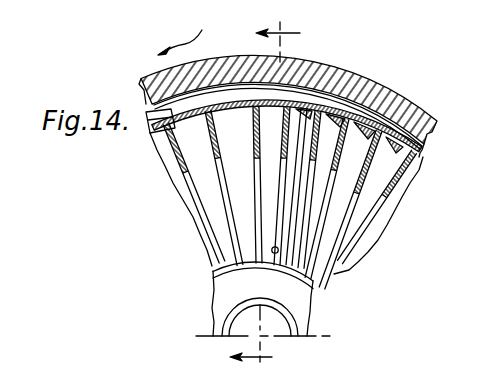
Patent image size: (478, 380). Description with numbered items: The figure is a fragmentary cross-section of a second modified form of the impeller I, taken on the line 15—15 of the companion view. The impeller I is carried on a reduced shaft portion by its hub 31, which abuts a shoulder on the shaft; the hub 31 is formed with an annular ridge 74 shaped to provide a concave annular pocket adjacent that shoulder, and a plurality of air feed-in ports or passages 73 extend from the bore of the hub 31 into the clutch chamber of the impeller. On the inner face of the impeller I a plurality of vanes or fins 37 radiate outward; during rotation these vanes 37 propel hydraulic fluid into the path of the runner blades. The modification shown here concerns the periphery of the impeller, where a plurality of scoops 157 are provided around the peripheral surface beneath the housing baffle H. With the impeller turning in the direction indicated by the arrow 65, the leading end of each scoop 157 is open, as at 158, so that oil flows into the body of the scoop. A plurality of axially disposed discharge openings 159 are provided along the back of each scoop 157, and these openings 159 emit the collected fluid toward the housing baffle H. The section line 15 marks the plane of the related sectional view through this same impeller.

The arrow 65 is at (181, 33).
The line 15— 15 is at (268, 193).
The housing baffle H is at (350, 66).
The scoops 157 is at (378, 95).
The open leading end of scoop 158 is at (252, 96).
The discharge openings 159 is at (331, 126).
The impeller I is at (153, 120).
The vanes or fins 37 is at (366, 214).
The annular ridge 74 is at (224, 272).
The air feed-in ports or passages 73 is at (277, 253).
The impeller hub 31 is at (298, 299).